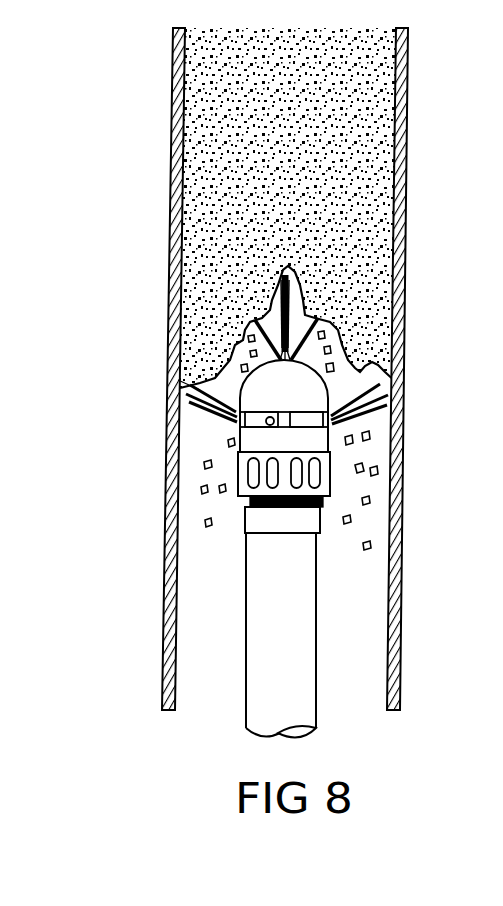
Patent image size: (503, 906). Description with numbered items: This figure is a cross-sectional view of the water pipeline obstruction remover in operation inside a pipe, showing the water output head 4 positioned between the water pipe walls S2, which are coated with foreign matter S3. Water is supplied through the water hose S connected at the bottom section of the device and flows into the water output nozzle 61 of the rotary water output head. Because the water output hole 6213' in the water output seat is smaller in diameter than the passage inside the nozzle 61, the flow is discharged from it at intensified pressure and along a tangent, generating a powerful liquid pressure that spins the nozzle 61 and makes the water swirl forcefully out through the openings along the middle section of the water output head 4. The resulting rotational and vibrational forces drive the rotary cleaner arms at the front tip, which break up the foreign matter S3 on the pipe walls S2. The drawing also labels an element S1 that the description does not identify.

The water output head 4 is at (313, 397).
The water output nozzle 61 is at (305, 420).
The water output hole 6213' is at (147, 440).
The water hose S is at (256, 521).
The drill pipe S1 is at (296, 605).
The water pipe walls S2 is at (408, 95).
The foreign matter S3 is at (173, 88).